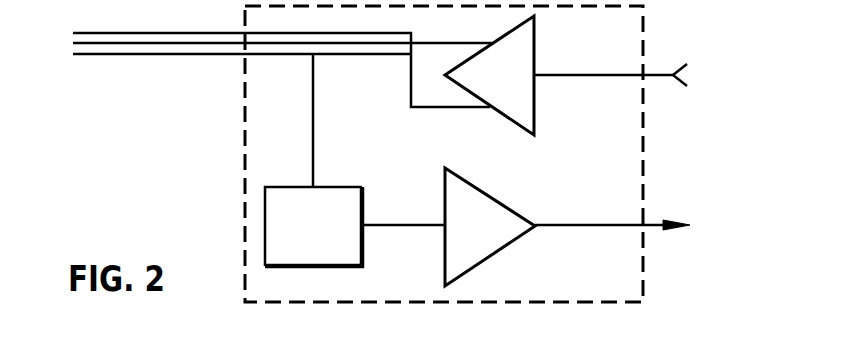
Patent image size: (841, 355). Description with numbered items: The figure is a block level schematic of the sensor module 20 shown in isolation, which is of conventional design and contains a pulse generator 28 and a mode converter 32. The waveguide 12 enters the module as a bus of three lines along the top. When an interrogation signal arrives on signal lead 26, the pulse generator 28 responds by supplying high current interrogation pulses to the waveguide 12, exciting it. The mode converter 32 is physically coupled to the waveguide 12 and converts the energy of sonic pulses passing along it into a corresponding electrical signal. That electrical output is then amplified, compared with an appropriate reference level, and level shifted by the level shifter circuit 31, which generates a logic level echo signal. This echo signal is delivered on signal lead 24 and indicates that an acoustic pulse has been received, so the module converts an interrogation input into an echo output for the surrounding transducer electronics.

The waveguide 12 is at (178, 56).
The sensor module 20 is at (243, 123).
The signal lead 24 is at (563, 225).
The signal lead 26 is at (563, 75).
The pulse generator 28 is at (534, 105).
The level shifter circuit 31 is at (495, 195).
The mode converter 32 is at (335, 187).